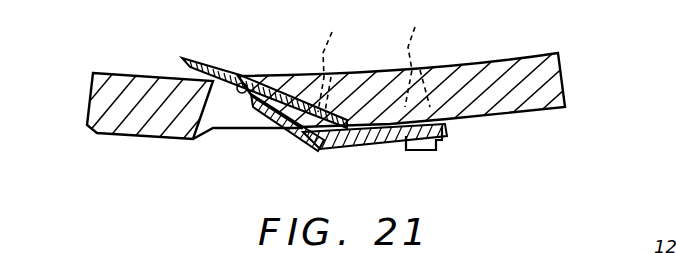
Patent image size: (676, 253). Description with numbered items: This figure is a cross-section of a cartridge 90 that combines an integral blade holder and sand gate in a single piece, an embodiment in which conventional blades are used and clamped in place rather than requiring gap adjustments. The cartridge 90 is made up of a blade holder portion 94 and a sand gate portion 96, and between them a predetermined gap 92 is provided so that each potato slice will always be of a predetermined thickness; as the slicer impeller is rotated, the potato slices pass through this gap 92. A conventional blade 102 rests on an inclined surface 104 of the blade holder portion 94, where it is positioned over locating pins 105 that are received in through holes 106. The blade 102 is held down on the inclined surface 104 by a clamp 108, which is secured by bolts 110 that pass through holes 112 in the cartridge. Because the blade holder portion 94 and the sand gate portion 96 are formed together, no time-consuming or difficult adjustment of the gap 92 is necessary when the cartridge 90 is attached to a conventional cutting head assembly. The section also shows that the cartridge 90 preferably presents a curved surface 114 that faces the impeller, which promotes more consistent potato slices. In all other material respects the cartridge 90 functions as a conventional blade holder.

The cartridge 90 is at (108, 52).
The gap 92 is at (231, 118).
The blade holder portion 94 is at (497, 118).
The sand gate portion 96 is at (148, 130).
The conventional blade 102 is at (193, 67).
The inclined surface 104 is at (239, 75).
The locating pins 105 is at (303, 130).
The through holes 106 is at (341, 60).
The clamp 108 is at (377, 150).
The bolts 110 is at (420, 151).
The holes 112 is at (432, 58).
The curved surface 114 is at (408, 78).